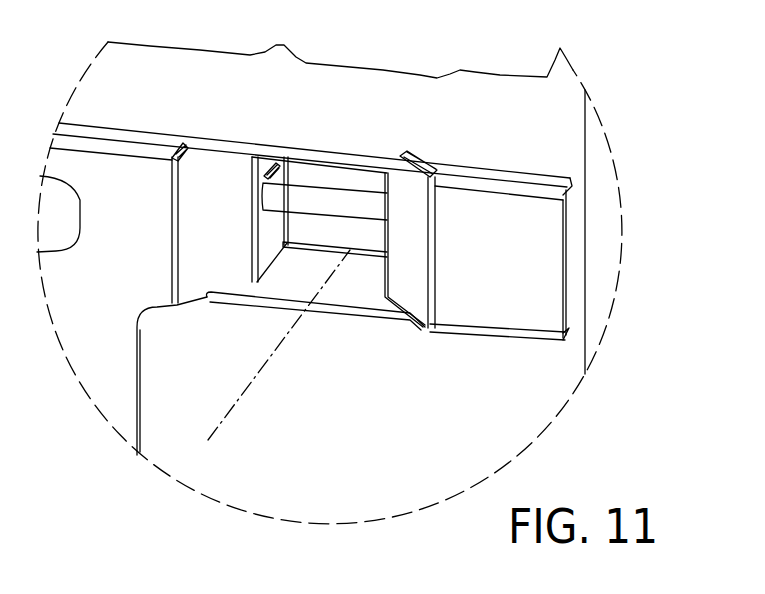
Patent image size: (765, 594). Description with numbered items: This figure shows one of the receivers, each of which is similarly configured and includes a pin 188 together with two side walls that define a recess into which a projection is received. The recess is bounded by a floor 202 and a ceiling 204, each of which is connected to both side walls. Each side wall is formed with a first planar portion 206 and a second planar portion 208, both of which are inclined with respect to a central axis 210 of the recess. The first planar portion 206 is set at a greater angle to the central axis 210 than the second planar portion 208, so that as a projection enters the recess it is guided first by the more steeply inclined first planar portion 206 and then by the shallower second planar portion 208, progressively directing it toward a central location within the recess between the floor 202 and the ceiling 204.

The pin 188 is at (340, 200).
The first planar portion 206 is at (197, 182).
The ceiling 204 is at (262, 178).
The second planar portion 208 is at (283, 240).
The floor 202 is at (372, 298).
The central axis 210 is at (260, 378).